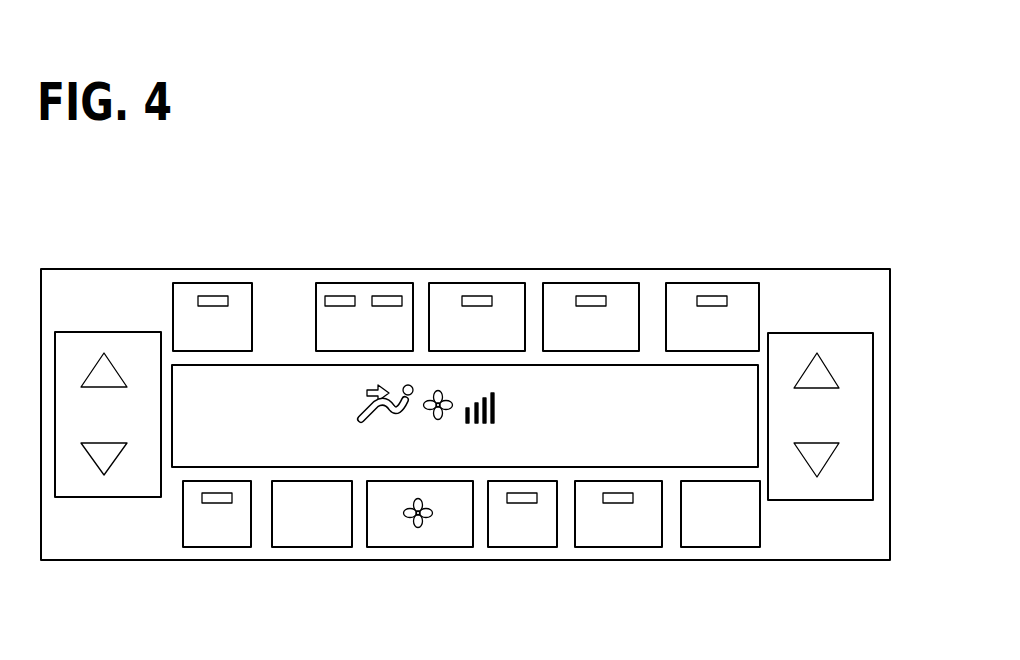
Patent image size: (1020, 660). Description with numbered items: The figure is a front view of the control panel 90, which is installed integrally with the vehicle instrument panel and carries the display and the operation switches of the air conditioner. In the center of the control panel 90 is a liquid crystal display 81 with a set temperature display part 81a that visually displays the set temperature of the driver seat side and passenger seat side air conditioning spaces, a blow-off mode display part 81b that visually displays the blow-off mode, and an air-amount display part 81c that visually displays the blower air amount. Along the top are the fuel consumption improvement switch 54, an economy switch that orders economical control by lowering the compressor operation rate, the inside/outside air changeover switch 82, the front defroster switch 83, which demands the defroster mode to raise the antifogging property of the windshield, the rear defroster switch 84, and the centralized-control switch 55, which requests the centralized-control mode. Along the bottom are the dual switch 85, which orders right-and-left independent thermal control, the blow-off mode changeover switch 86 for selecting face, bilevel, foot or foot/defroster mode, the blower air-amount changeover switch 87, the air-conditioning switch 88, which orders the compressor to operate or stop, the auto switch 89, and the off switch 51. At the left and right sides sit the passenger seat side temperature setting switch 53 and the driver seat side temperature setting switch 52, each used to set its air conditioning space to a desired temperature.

The off switch 51 is at (720, 540).
The driver seat side temperature setting switch 52 is at (820, 453).
The passenger seat side temperature setting switch 53 is at (103, 450).
The fuel consumption improvement switch 54 is at (213, 287).
The centralized-control switch 55 is at (710, 290).
The liquid crystal display 81 is at (280, 388).
The set temperature display part 81a is at (223, 403).
The blow-off mode display part 81b is at (382, 423).
The air-amount display part 81c is at (472, 427).
The inside/outside air changeover switch 82 is at (362, 290).
The front defroster switch 83 is at (477, 290).
The rear defroster switch 84 is at (592, 290).
The dual switch 85 is at (212, 542).
The blow-off mode changeover switch 86 is at (308, 542).
The blower air-amount changeover switch 87 is at (419, 540).
The air-conditioning switch 88 is at (521, 540).
The auto switch 89 is at (616, 540).
The control panel 90 is at (143, 285).